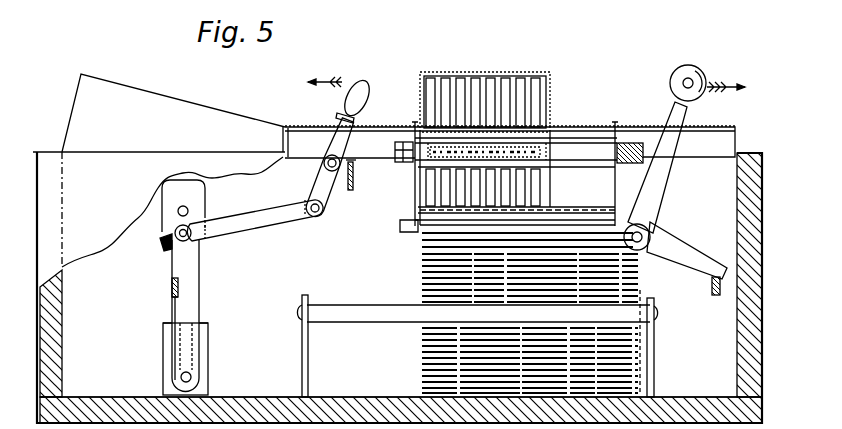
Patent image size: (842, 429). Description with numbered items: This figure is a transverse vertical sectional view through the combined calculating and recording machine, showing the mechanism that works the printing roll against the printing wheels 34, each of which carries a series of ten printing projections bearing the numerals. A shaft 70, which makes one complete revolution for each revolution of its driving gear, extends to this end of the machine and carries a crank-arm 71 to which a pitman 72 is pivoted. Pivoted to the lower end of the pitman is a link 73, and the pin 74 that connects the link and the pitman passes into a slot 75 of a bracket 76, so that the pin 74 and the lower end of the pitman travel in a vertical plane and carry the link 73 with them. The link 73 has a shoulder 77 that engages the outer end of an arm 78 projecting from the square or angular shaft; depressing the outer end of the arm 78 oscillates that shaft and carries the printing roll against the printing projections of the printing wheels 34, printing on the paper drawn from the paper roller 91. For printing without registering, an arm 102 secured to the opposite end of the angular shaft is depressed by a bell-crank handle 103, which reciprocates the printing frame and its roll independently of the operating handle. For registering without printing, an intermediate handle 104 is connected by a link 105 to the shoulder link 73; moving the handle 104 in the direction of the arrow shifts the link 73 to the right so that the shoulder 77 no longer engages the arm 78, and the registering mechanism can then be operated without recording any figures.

The printing wheel 34 is at (472, 72).
The shaft 70 is at (188, 211).
The crank-arm 71 is at (167, 225).
The pitman 72 is at (173, 310).
The link 73 is at (190, 312).
The pin 74 is at (190, 377).
The slot 75 is at (195, 348).
The bracket 76 is at (165, 353).
The shoulder 77 is at (170, 280).
The arm 78 is at (170, 292).
The paper roller 91 is at (493, 292).
The arm 102 is at (712, 290).
The bell-crank handle 103 is at (657, 205).
The intermediate handle 104 is at (346, 122).
The link 105 is at (270, 220).